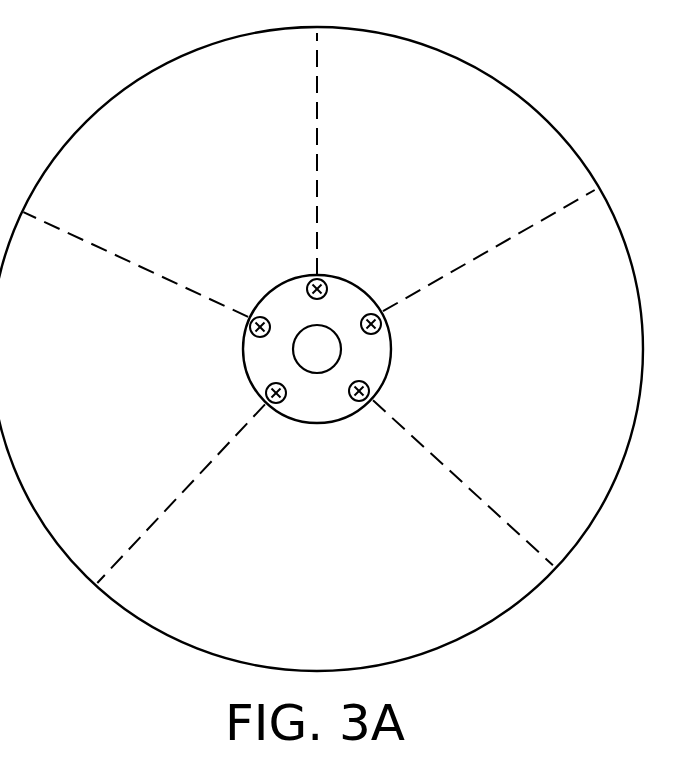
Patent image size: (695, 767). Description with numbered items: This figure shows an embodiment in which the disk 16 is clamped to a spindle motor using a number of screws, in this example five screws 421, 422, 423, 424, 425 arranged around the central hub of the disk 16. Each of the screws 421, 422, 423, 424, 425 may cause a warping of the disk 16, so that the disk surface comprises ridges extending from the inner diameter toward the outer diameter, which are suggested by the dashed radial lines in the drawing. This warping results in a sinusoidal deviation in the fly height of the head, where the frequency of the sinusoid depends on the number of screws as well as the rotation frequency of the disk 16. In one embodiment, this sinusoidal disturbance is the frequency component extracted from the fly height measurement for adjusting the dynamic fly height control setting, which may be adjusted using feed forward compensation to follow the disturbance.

The disk 16 is at (553, 62).
The screw 421 is at (326, 283).
The screw 422 is at (389, 334).
The screw 423 is at (361, 401).
The screw 424 is at (275, 403).
The screw 425 is at (249, 328).